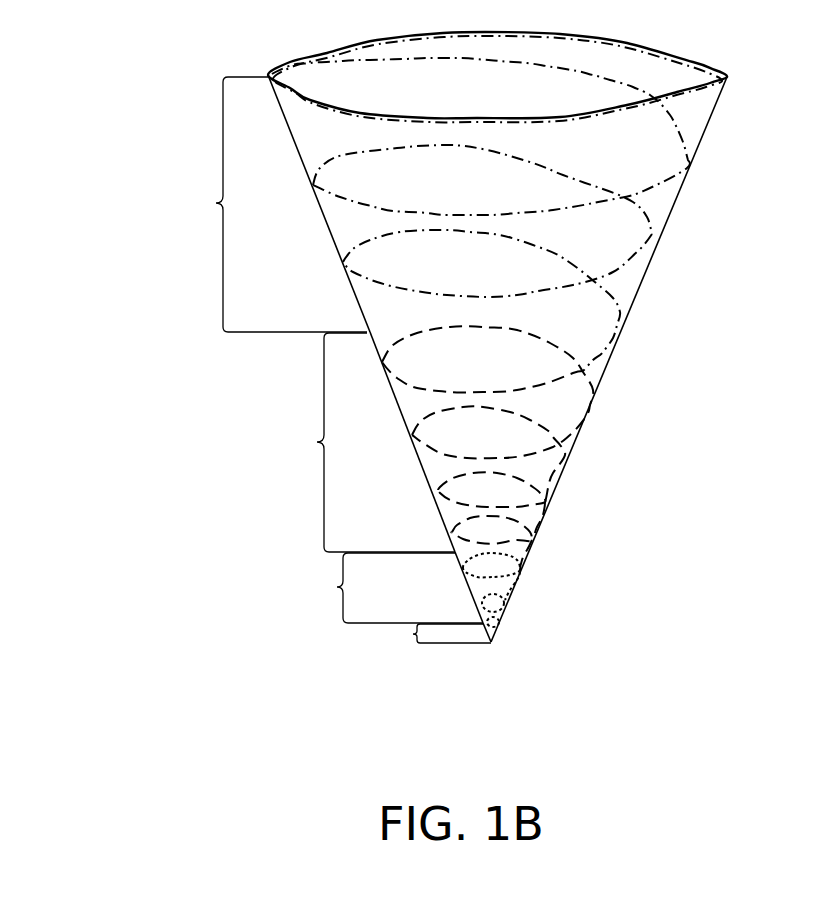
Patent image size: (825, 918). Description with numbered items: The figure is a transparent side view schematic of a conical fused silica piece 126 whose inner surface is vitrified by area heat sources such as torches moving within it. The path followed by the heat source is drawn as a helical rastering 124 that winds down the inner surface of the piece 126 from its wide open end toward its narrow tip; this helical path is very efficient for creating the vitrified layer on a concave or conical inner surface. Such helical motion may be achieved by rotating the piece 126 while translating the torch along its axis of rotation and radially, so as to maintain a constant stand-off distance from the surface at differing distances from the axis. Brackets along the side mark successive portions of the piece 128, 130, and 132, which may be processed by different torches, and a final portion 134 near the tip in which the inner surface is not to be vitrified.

The helical rastering 124 is at (585, 417).
The piece 126 is at (575, 447).
The portion of the piece 128 is at (205, 205).
The portion of the piece 130 is at (304, 443).
The portion of the piece 132 is at (328, 588).
The portion of the piece 134 is at (402, 637).